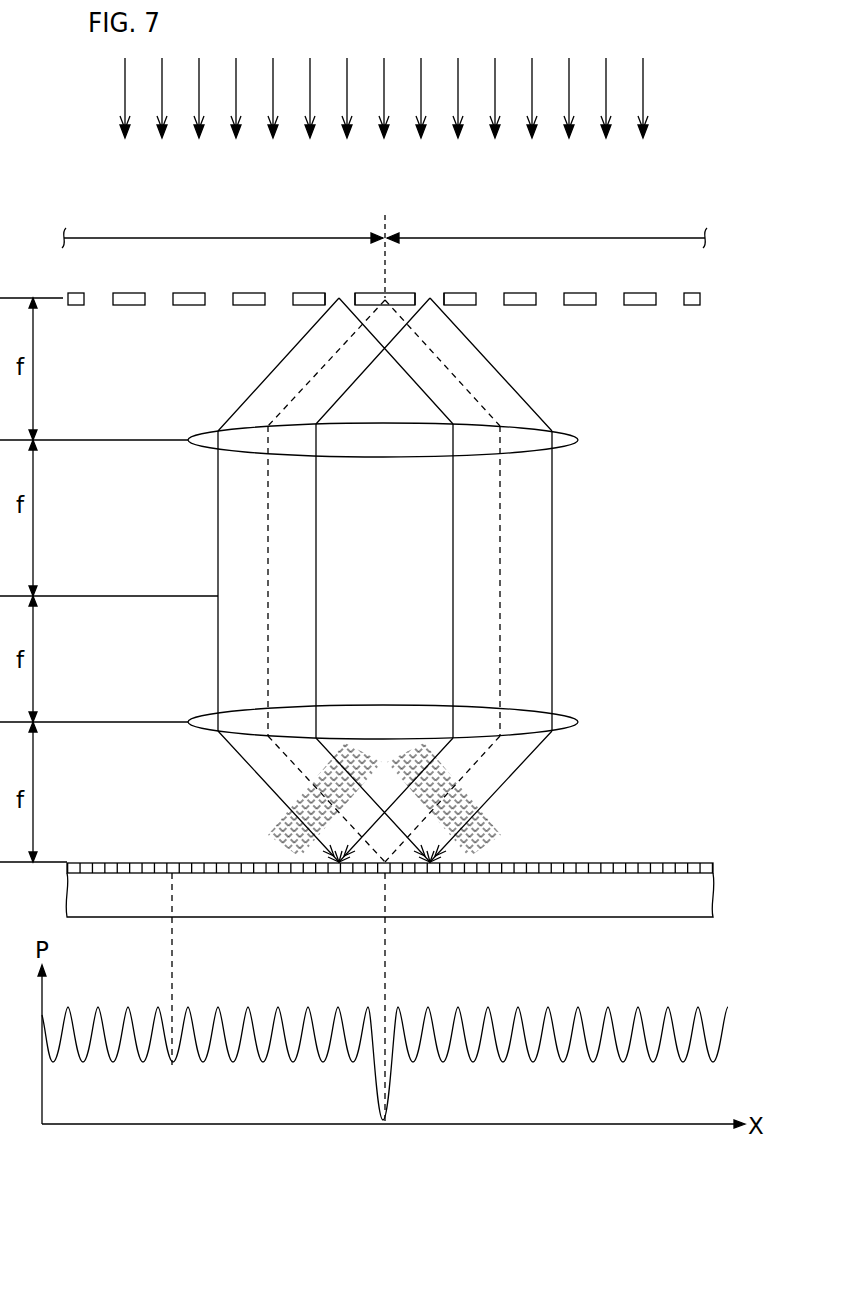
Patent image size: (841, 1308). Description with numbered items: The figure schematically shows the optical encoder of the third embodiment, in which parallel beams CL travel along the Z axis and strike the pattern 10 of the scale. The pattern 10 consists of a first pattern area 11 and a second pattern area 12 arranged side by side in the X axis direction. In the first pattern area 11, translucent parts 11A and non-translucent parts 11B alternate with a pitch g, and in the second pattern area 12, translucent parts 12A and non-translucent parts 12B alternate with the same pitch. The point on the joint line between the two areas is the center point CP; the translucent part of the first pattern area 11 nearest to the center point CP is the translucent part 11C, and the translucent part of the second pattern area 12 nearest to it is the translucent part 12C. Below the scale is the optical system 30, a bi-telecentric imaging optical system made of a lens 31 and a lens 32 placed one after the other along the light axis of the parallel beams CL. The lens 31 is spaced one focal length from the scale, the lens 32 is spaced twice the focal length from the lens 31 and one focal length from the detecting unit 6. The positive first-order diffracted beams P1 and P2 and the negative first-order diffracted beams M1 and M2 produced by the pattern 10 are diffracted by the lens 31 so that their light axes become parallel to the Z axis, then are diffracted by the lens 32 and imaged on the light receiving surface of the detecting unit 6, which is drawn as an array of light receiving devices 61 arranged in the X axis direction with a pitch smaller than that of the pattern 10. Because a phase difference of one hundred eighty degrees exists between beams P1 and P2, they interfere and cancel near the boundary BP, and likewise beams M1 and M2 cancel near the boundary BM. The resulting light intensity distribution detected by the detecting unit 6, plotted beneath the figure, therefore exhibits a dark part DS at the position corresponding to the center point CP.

The pattern 10 is at (428, 313).
The first pattern area 11 is at (650, 238).
The second pattern area 12 is at (123, 238).
The translucent part 11A is at (670, 298).
The non-translucent part 11B is at (640, 306).
The translucent part 11C is at (430, 293).
The translucent part 12A is at (98, 298).
The non-translucent part 12B is at (128, 306).
The translucent part 12C is at (338, 293).
The optical system 30 is at (441, 580).
The lens 31 is at (578, 432).
The lens 32 is at (578, 717).
The detecting unit 6 is at (429, 860).
The light receiving device 61 is at (695, 862).
The parallel beams CL is at (668, 93).
The center point CP is at (385, 244).
The negative first-order diffracted beam M1 is at (316, 538).
The negative first-order diffracted beam M2 is at (218, 483).
The positive first-order diffracted beam P1 is at (552, 478).
The positive first-order diffracted beam P2 is at (453, 500).
The boundary BM is at (268, 532).
The boundary BP is at (502, 525).
The dark part DS is at (385, 1014).